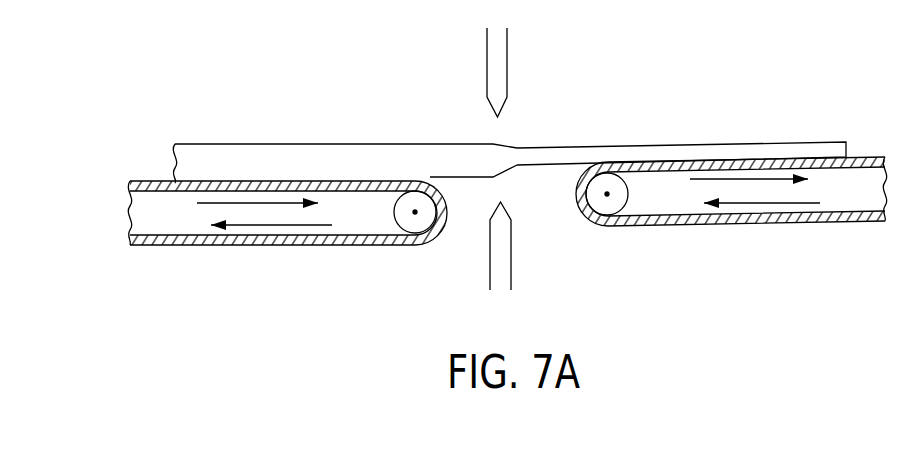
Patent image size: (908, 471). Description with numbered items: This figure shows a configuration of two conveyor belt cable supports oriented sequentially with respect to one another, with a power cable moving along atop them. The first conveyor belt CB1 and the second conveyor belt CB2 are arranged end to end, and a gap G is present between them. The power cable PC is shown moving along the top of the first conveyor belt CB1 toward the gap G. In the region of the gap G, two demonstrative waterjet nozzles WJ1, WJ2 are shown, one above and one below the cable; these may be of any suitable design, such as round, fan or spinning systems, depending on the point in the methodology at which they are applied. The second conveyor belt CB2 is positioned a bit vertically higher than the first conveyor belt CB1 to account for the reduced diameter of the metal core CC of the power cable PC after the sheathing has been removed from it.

The waterjet nozzle WJ1 is at (528, 55).
The waterjet nozzle WJ2 is at (476, 270).
The metal core CC is at (734, 125).
The power cable PC is at (325, 177).
The first conveyor belt CB1 is at (283, 265).
The second conveyor belt CB2 is at (735, 237).
The gap G is at (559, 250).